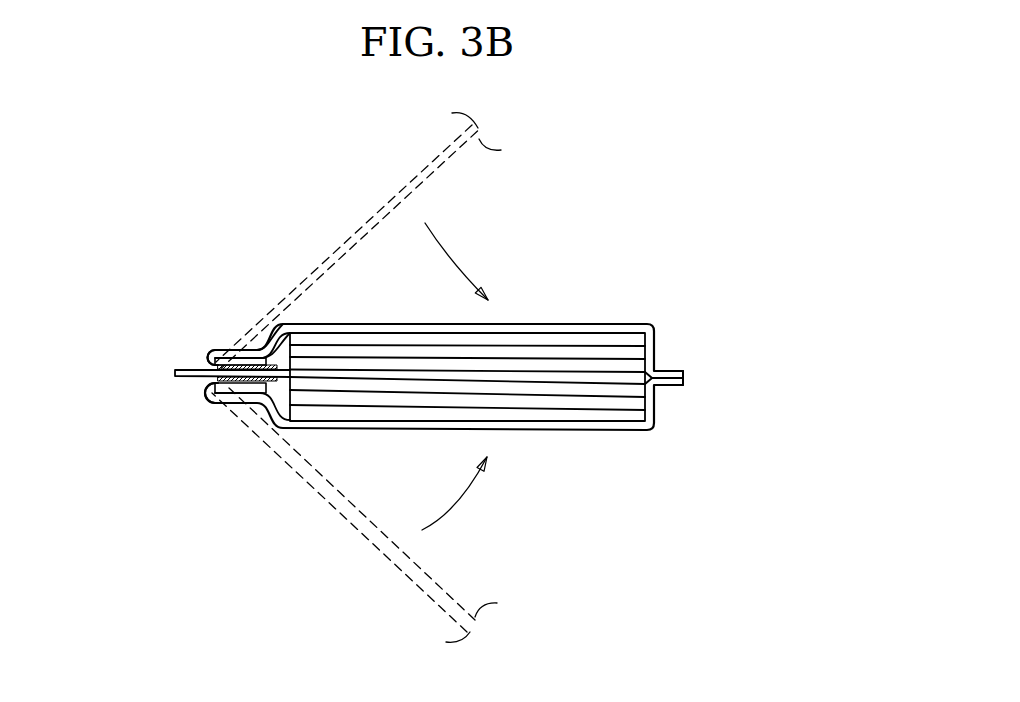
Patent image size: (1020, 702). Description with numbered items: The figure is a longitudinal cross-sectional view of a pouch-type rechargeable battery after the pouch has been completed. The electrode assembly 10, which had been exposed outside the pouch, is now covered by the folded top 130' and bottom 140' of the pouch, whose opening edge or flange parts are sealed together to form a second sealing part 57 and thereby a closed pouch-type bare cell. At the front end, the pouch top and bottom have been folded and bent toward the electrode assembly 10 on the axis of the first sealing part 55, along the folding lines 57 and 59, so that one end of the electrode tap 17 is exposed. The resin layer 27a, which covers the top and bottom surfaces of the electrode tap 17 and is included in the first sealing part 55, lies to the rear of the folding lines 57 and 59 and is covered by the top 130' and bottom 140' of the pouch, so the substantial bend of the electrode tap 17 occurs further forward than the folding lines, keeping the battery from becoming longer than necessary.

The electrode assembly 10 is at (638, 324).
The top of the pouch 130' is at (446, 314).
The bottom of the pouch 140' is at (444, 436).
The folding line / second sealing part 57 is at (210, 356).
The first sealing part 55 is at (277, 325).
The electrode tap 17 is at (172, 373).
The folding line 59 is at (210, 381).
The resin layer 27a is at (246, 384).